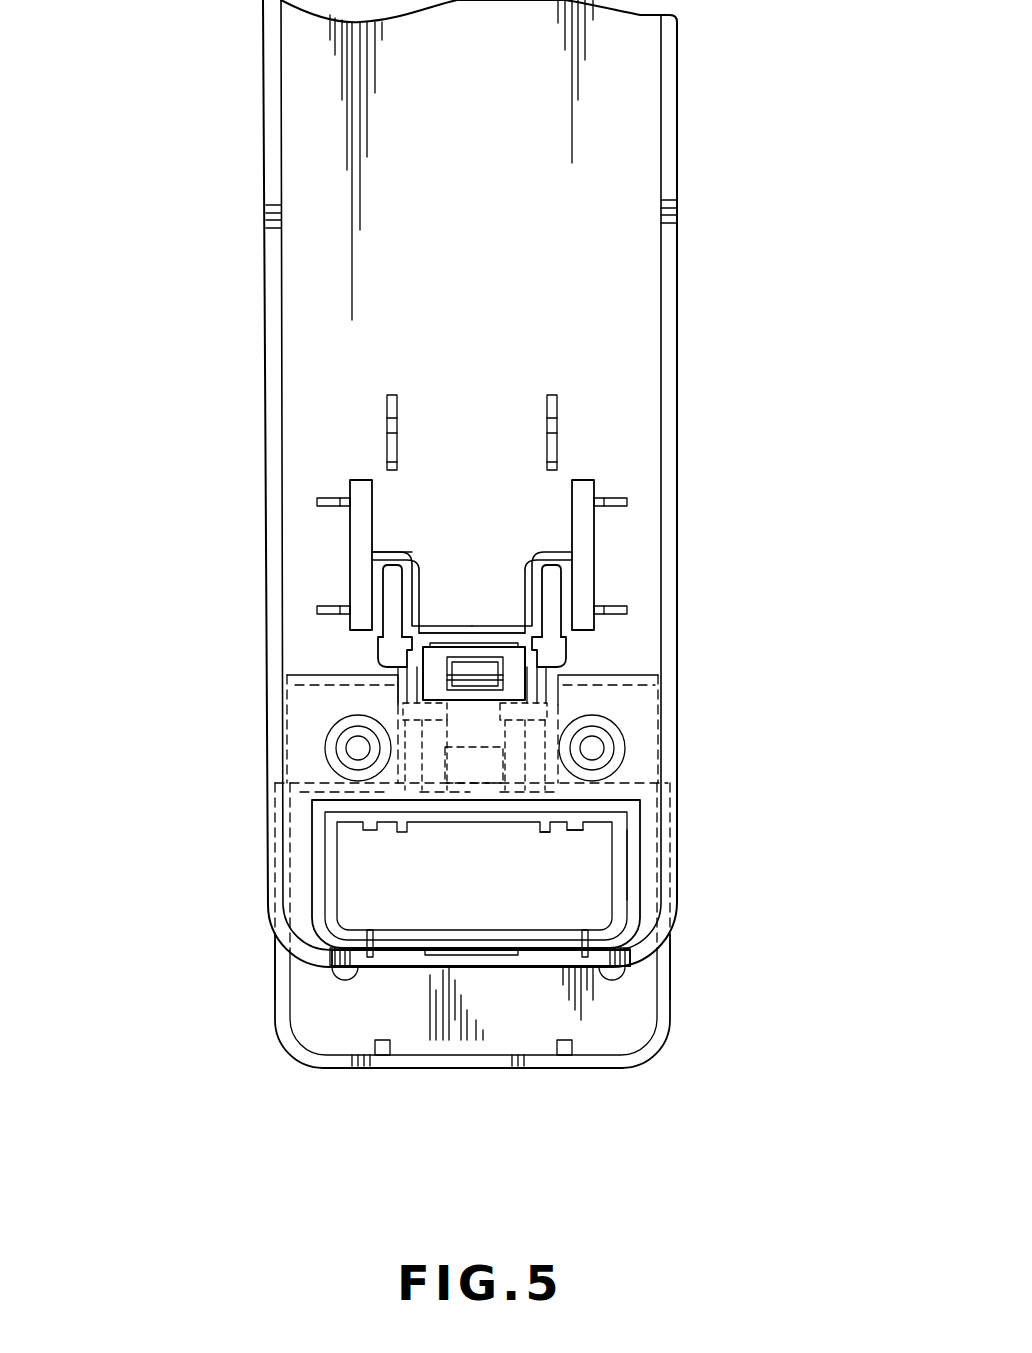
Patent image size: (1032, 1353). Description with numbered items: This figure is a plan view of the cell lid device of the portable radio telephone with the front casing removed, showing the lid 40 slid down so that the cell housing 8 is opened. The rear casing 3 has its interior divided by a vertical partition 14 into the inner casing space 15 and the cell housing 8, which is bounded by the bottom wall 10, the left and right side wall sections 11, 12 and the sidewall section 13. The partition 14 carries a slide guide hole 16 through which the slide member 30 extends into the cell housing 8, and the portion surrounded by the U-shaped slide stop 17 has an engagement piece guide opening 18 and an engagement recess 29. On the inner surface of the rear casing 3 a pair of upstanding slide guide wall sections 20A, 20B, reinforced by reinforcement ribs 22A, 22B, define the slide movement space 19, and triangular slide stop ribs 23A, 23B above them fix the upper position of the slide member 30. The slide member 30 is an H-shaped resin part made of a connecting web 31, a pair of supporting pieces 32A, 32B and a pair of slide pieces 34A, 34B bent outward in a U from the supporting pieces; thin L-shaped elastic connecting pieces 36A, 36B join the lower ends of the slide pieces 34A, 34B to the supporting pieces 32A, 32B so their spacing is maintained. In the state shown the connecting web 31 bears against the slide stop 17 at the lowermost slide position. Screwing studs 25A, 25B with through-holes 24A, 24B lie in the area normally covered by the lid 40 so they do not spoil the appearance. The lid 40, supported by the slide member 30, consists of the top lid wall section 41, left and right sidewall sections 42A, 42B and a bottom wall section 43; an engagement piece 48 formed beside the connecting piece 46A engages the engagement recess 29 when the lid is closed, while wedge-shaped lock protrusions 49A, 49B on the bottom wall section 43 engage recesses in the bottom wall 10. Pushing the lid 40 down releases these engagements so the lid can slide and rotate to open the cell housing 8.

The rear casing 3 is at (677, 165).
The inner space 15 is at (545, 313).
The slide movement space 19 is at (412, 523).
The slide stop rib 23A is at (385, 400).
The slide stop rib 23B is at (557, 400).
The reinforcement rib 22A is at (325, 497).
The reinforcement rib 22B is at (619, 497).
The slide guide wall section 20A is at (350, 525).
The slide guide wall section 20B is at (594, 522).
The slide stop 17 is at (492, 647).
The slide member 30 is at (426, 633).
The connecting web 31 is at (465, 633).
The supporting piece 32A is at (380, 552).
The supporting piece 32B is at (562, 552).
The slide piece 34A is at (385, 580).
The slide piece 34B is at (566, 577).
The elastic connecting piece 36A is at (378, 660).
The elastic connecting piece 36B is at (566, 655).
The partition 14 is at (320, 688).
The engagement recess 29 is at (560, 700).
The slide guide hole 16 is at (395, 712).
The engagement piece guide opening 18 is at (627, 700).
The through-hole 24A is at (358, 748).
The through-hole 24B is at (600, 750).
The screwing stud 25A is at (335, 765).
The screwing stud 25B is at (615, 730).
The connecting piece 46A is at (310, 798).
The side wall section 11 is at (322, 868).
The engagement piece 48 is at (488, 770).
The sidewall section 13 is at (570, 827).
The cell housing 8 is at (410, 880).
The side wall section 12 is at (633, 875).
The sidewall section 42A is at (278, 978).
The sidewall section 42B is at (667, 962).
The lid 40 is at (627, 1010).
The bottom wall 10 is at (395, 952).
The top lid wall section 41 is at (370, 1013).
The lock protrusion 49A is at (382, 1055).
The bottom wall section 43 is at (485, 1060).
The lock protrusion 49B is at (563, 1055).